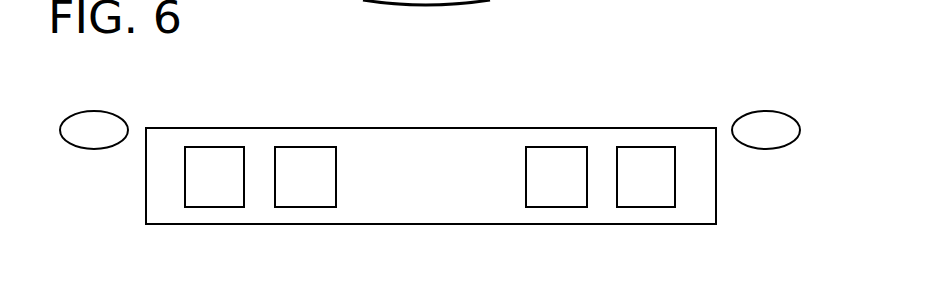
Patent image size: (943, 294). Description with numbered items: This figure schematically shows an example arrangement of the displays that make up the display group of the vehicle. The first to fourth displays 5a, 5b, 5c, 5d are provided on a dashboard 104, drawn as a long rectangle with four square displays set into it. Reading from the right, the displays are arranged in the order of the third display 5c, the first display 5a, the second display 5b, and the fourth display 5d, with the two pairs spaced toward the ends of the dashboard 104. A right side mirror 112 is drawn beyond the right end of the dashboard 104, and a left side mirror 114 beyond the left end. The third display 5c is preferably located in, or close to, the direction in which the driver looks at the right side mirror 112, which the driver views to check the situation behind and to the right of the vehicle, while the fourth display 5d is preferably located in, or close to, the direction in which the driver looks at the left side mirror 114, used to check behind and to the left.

The dashboard 104 is at (485, 127).
The right side mirror 112 is at (768, 111).
The left side mirror 114 is at (92, 112).
The first display 5a is at (554, 207).
The second display 5b is at (304, 207).
The third display 5c is at (643, 207).
The fourth display 5d is at (215, 207).